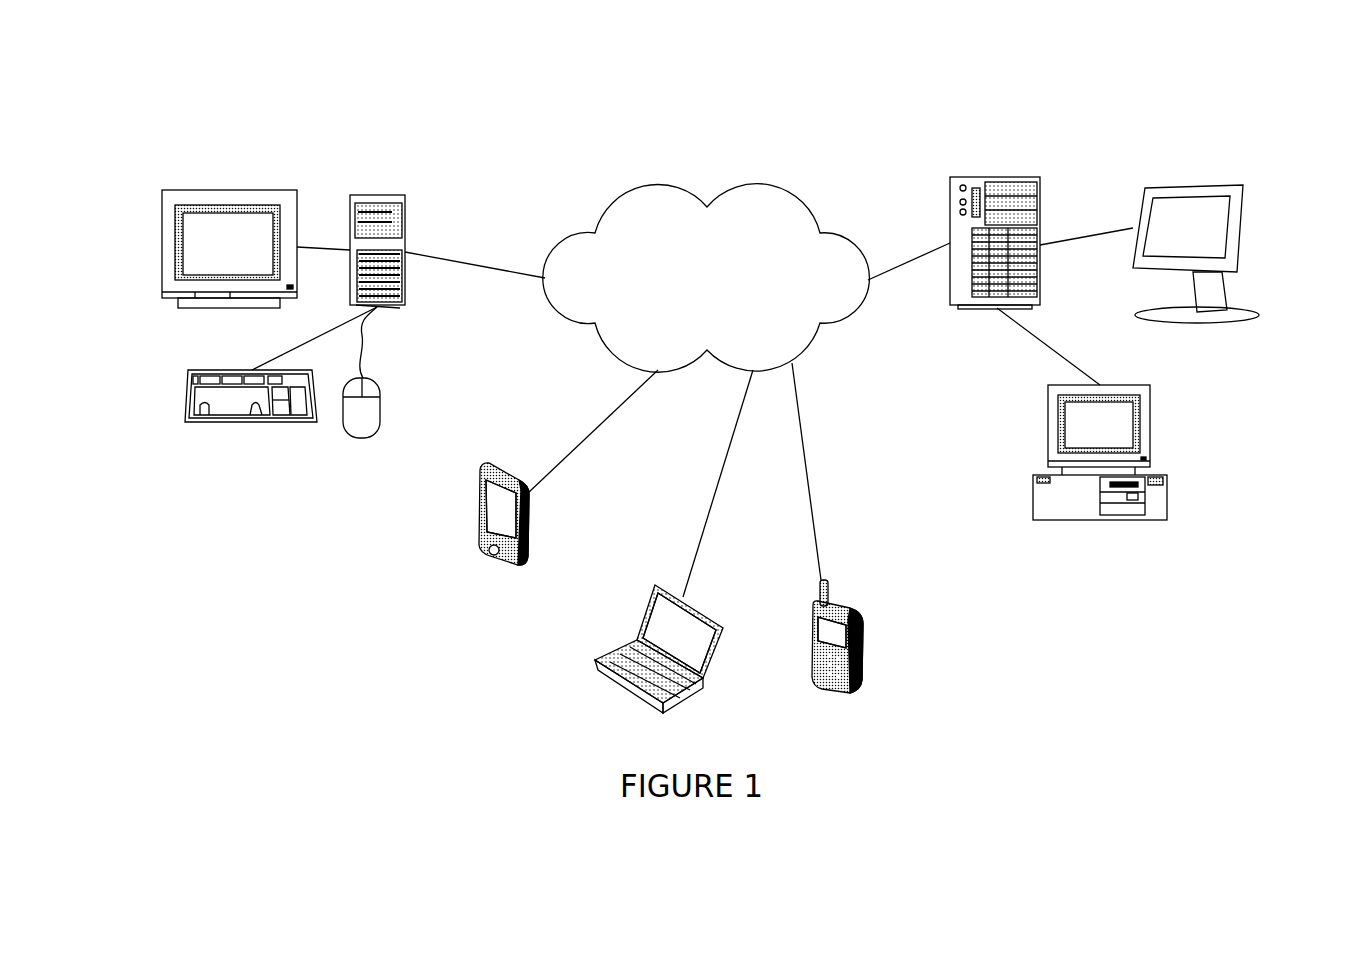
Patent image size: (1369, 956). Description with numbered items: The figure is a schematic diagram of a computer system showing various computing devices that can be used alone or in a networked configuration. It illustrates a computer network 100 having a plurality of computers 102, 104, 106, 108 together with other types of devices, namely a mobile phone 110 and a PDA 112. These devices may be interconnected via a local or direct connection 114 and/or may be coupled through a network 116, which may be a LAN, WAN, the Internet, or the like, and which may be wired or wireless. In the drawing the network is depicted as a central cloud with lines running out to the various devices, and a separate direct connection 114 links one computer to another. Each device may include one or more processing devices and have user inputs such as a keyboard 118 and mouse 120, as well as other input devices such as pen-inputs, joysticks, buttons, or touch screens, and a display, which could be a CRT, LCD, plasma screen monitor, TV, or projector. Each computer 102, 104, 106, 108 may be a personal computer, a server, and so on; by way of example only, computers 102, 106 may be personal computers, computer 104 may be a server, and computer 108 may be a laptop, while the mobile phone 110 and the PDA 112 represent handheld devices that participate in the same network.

The computer network 100 is at (567, 91).
The computer 102 is at (380, 202).
The computer 104 is at (1038, 182).
The computer 106 is at (1091, 452).
The computer 108 is at (595, 660).
The mobile phone 110 is at (863, 642).
The PDA 112 is at (480, 540).
The local or direct connection 114 is at (1040, 345).
The network 116 is at (753, 188).
The keyboard 118 is at (185, 390).
The mouse 120 is at (380, 398).